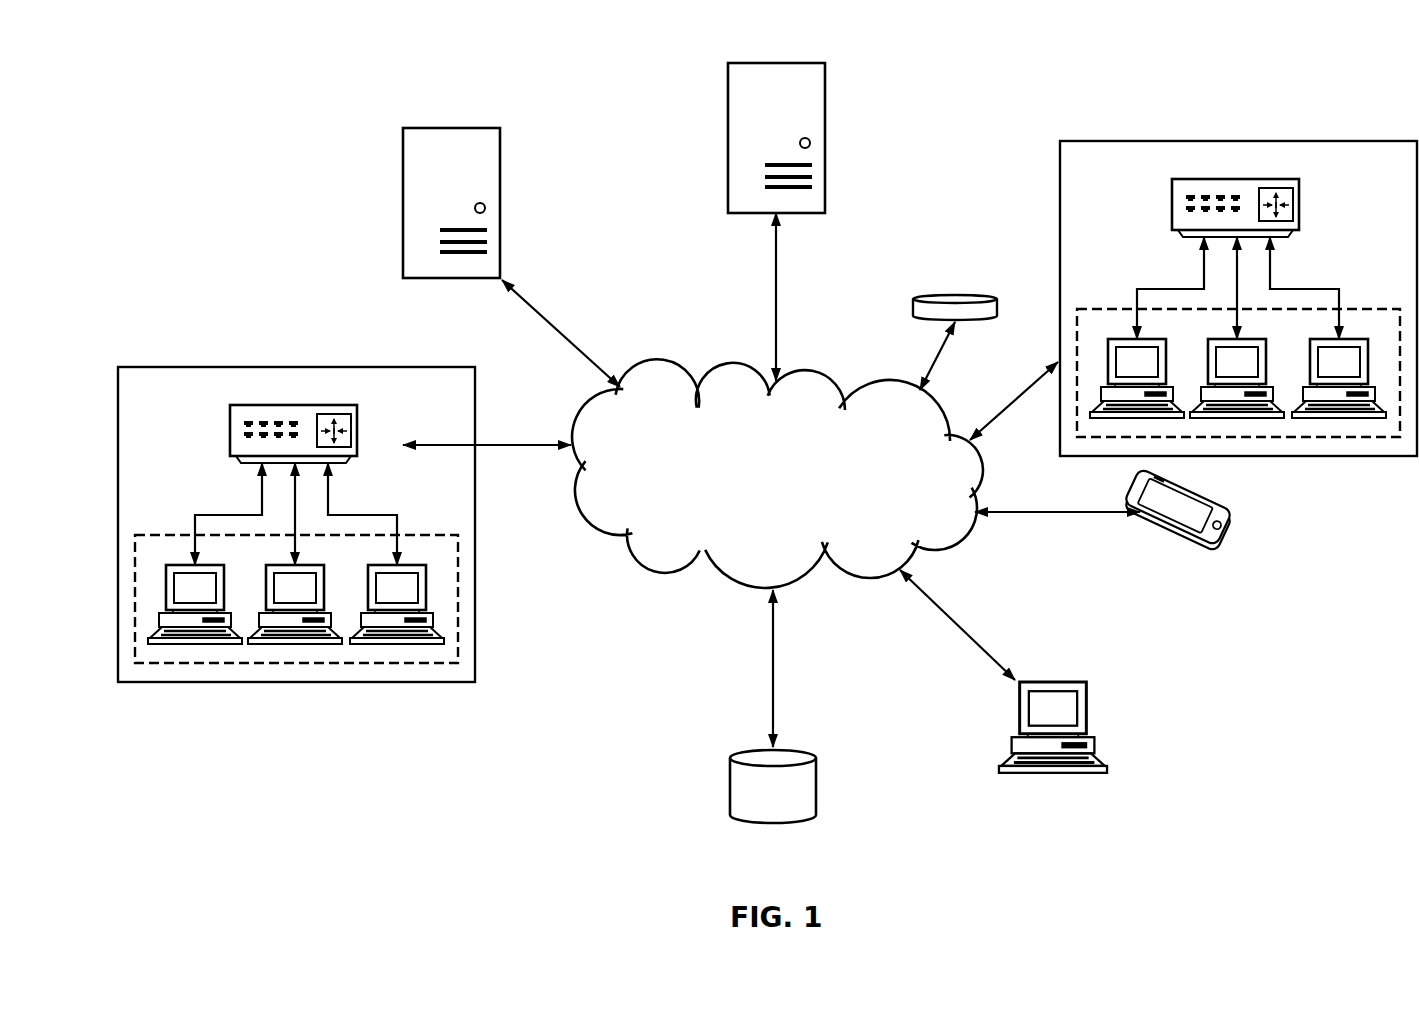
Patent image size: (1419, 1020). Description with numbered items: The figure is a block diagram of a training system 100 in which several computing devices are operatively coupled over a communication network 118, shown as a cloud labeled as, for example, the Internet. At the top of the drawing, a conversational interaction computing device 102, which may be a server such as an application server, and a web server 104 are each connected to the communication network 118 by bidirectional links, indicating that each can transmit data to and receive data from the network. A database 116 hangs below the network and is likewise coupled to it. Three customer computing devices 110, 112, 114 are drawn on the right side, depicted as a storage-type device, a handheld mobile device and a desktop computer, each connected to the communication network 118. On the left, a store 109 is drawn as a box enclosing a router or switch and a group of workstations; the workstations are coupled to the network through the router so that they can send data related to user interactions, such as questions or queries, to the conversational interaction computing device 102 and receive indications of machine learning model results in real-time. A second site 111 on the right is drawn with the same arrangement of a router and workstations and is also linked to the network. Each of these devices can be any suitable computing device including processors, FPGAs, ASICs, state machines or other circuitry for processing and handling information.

The training system 100 is at (1165, 52).
The conversational interaction computing device 102 is at (792, 63).
The web server 104 is at (427, 128).
The store 109 is at (195, 367).
The customer computing device 110 is at (968, 295).
The site 111 is at (1238, 281).
The customer computing device 112 is at (1205, 498).
The customer computing device 114 is at (1075, 682).
The database 116 is at (802, 752).
The communication network 118 is at (815, 371).